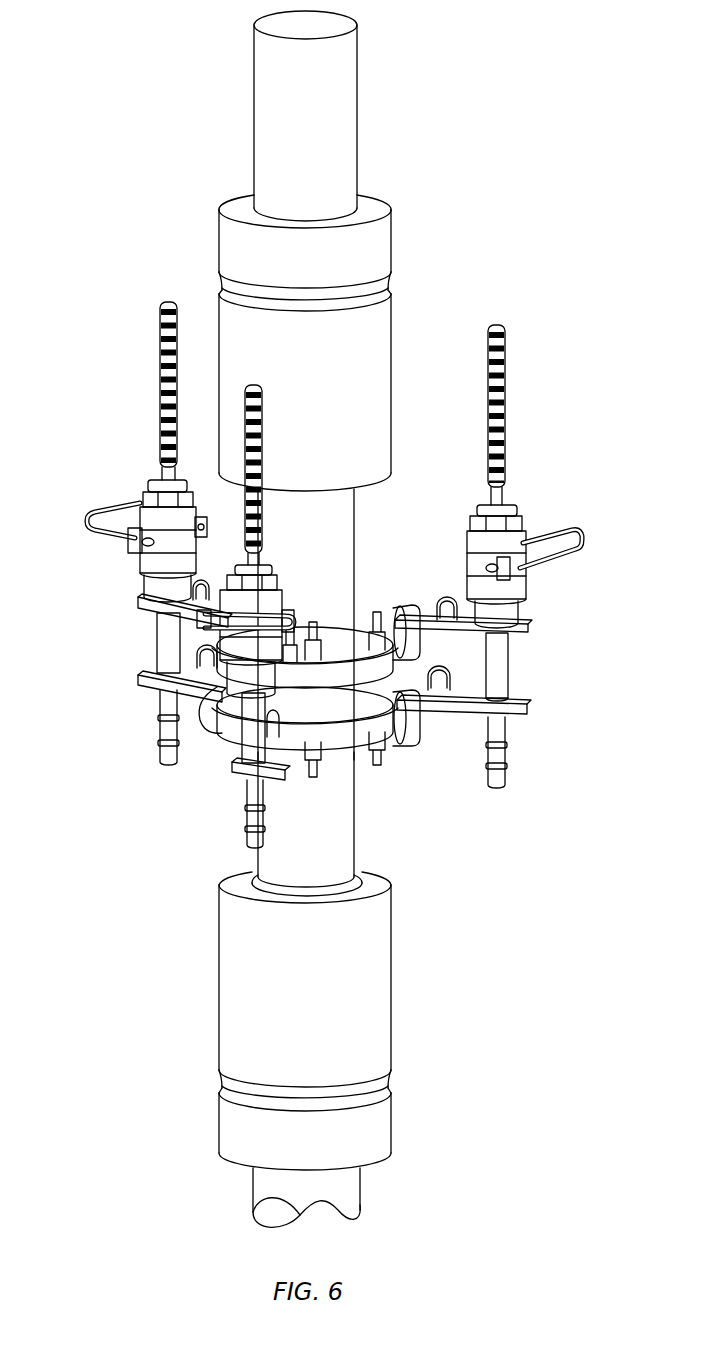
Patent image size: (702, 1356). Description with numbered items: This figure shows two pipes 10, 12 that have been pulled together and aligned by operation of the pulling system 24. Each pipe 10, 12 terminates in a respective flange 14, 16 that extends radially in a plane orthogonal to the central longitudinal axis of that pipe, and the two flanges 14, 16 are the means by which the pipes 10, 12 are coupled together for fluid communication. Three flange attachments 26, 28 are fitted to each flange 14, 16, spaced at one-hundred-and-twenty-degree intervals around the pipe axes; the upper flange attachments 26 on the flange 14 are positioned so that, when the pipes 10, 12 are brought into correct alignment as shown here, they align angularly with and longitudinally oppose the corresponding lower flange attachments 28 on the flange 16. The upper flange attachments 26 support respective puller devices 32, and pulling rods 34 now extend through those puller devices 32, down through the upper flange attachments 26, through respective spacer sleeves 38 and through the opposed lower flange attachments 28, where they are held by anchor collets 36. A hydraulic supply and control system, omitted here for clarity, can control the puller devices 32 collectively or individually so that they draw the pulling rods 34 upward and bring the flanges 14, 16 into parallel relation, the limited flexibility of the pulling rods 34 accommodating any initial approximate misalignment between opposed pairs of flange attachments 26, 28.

The pipe 10 is at (265, 107).
The pipe 12 is at (350, 1193).
The flange 14 is at (355, 660).
The flange 16 is at (357, 735).
The pulling system 24 is at (90, 450).
The upper flange attachment 26 is at (140, 600).
The lower flange attachment 28 is at (142, 682).
The puller device 32 is at (147, 563).
The pulling rod 34 is at (165, 380).
The anchor collet 36 is at (163, 752).
The spacer sleeve 38 is at (162, 648).